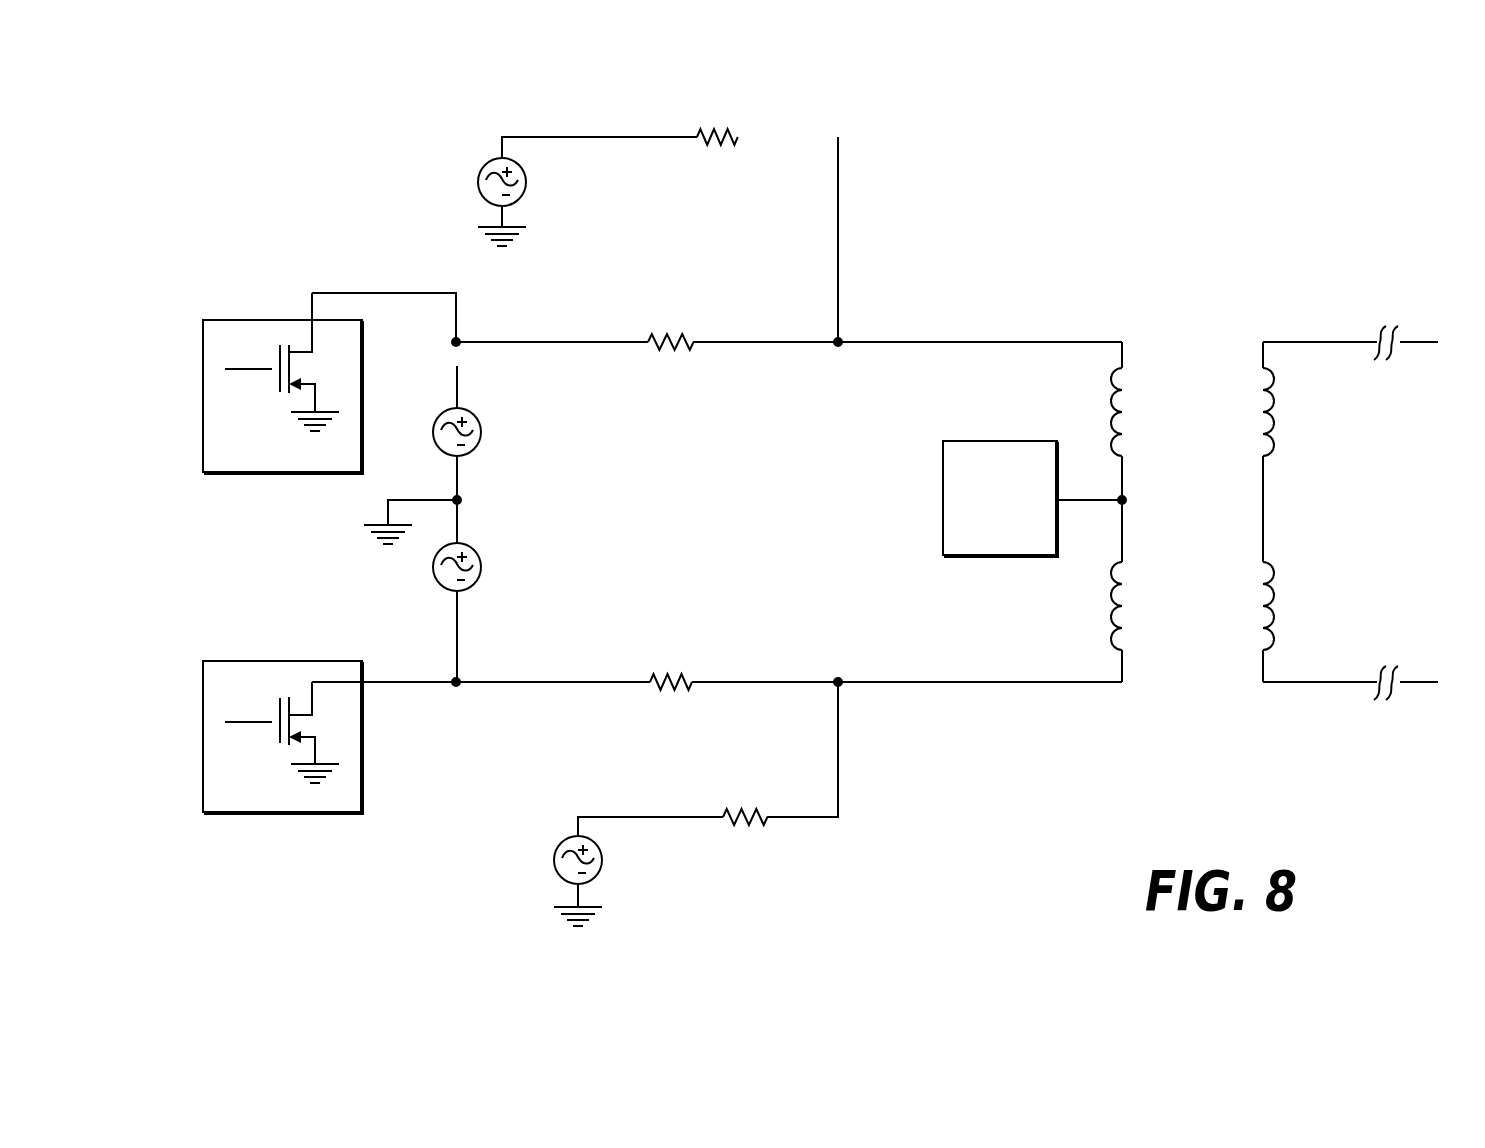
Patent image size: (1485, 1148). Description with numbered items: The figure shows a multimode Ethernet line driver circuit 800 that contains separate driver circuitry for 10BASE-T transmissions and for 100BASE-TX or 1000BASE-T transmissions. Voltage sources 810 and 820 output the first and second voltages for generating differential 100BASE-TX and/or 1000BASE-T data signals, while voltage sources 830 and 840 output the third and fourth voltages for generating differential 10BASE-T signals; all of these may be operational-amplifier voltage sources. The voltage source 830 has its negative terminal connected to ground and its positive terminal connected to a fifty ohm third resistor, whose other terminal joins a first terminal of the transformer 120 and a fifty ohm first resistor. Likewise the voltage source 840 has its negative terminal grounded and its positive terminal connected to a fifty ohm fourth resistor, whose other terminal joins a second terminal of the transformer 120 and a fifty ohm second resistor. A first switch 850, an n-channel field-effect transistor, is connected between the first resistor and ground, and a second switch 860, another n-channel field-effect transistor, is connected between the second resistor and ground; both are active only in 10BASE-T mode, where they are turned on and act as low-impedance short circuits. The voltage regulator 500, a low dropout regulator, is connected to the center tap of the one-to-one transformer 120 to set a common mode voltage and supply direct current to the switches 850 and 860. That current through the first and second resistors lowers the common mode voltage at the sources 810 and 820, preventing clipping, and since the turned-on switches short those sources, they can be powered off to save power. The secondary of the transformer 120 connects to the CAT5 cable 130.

The multimode Ethernet line driver circuit 800 is at (987, 210).
The voltage source 810 is at (486, 424).
The voltage source 820 is at (486, 566).
The voltage source 830 is at (468, 155).
The voltage source 840 is at (552, 840).
The first switch 850 is at (182, 374).
The second switch 860 is at (176, 730).
The voltage regulator 500 is at (988, 523).
The transformer 120 is at (1202, 677).
The CAT5 cable 130 is at (1348, 531).